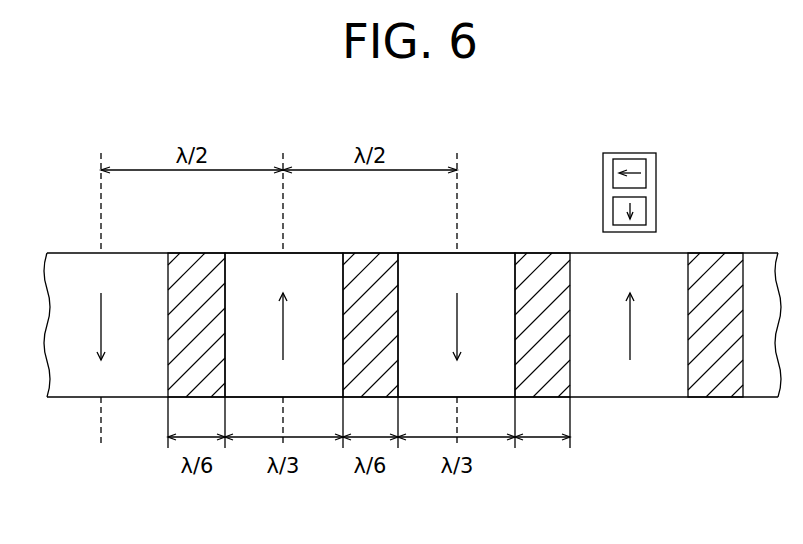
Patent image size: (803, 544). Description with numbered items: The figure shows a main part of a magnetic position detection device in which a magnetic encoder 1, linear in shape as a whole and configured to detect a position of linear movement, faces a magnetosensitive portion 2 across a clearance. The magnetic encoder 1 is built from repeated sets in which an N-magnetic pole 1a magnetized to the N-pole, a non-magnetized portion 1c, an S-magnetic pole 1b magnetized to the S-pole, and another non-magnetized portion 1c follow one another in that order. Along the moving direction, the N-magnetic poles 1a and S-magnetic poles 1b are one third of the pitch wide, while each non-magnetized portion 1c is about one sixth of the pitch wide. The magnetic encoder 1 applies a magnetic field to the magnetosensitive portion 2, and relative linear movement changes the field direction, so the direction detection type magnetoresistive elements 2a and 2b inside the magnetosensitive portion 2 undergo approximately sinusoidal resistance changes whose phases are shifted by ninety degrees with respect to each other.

The magnetic encoder 1 is at (645, 398).
The N-magnetic pole 1a is at (305, 253).
The S-magnetic pole 1b is at (487, 253).
The non-magnetized portion 1c is at (197, 253).
The magnetosensitive portion 2 is at (605, 153).
The direction detection type magnetoresistive element 2a is at (646, 210).
The direction detection type magnetoresistive element 2b is at (646, 170).